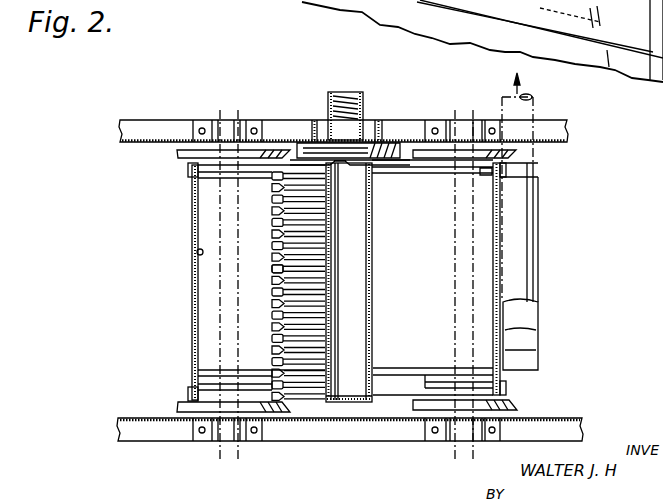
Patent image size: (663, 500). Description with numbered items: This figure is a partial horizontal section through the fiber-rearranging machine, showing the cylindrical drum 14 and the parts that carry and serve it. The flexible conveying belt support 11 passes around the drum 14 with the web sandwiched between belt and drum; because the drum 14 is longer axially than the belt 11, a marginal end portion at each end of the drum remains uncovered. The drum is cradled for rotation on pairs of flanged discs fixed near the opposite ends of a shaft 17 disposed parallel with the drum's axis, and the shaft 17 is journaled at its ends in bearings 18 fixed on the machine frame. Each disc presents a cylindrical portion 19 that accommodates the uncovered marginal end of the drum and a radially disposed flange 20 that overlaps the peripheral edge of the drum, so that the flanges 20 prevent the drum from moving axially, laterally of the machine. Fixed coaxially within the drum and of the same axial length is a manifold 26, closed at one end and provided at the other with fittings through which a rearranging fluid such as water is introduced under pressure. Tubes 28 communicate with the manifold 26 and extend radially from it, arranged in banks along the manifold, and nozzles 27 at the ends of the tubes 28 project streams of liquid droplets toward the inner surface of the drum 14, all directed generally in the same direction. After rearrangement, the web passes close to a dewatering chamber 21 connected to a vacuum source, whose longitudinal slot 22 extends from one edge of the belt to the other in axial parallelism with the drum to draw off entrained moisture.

The flexible conveying belt support 11 is at (192, 214).
The cylindrical drum 14 is at (197, 251).
The shaft 17 is at (219, 284).
The bearings 18 is at (242, 121).
The cylindrical portions 19 is at (187, 170).
The radially disposed flanges 20 is at (178, 151).
The chamber 21 is at (521, 313).
The longitudinal slot 22 is at (522, 331).
The manifold 26 is at (372, 243).
The nozzles 27 is at (274, 212).
The tubes 28 is at (284, 261).